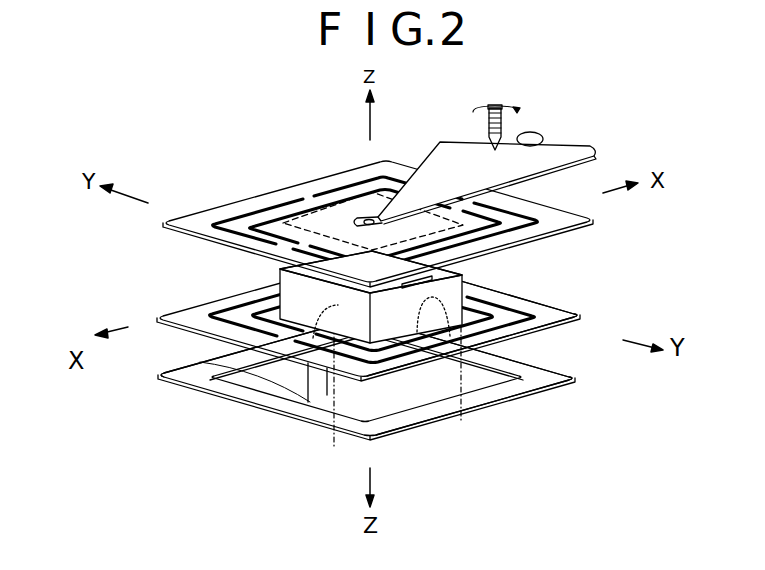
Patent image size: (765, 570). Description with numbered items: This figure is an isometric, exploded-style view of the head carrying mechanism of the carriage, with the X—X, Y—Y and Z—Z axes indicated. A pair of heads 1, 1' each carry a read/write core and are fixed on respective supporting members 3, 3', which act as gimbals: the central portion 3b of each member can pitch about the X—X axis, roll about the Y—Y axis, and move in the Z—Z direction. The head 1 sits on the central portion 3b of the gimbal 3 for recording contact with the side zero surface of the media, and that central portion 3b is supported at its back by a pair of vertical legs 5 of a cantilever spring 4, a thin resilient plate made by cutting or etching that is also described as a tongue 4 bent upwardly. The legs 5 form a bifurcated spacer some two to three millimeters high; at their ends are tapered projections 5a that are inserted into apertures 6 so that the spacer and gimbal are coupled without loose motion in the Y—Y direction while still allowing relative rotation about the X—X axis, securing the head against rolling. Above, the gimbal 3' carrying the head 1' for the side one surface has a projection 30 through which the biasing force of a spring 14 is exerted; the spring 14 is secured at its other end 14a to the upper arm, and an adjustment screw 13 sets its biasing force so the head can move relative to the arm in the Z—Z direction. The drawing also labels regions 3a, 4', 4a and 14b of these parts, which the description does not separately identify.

The head 1 is at (329, 297).
The head 1' is at (329, 267).
The supporting member 3 is at (374, 319).
The supporting member 3' is at (378, 223).
The spring plate outer frame 3a is at (557, 315).
The central portion 3b is at (272, 223).
The cantilever spring 4 is at (366, 380).
The base plate rim 4' is at (248, 370).
The base plate frame portion 4a is at (520, 395).
The legs 5 is at (308, 402).
The projections 5a is at (381, 307).
The apertures 6 is at (402, 387).
The adjustment screw 13 is at (498, 104).
The spring 14 is at (432, 168).
The other end of spring 14a is at (573, 143).
The tab of lever plate 14b is at (366, 217).
The projection 30 is at (356, 216).